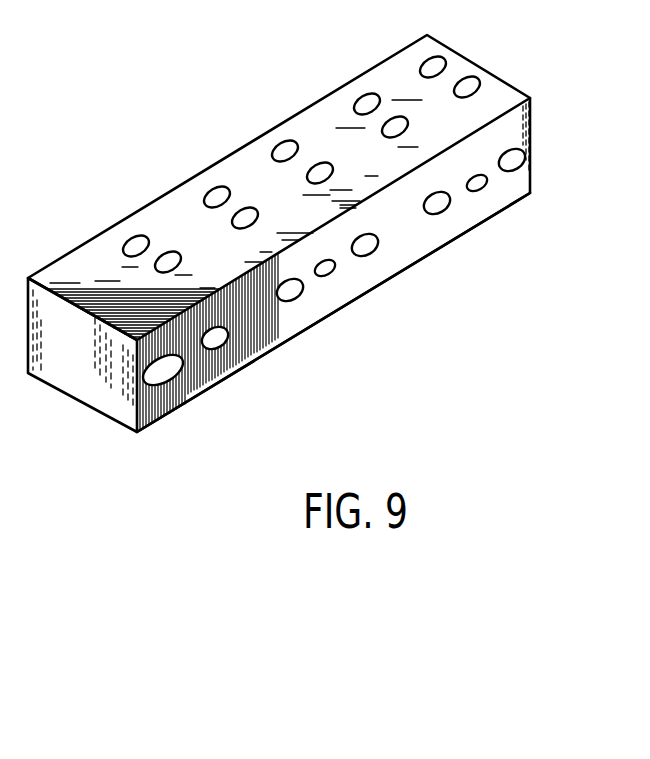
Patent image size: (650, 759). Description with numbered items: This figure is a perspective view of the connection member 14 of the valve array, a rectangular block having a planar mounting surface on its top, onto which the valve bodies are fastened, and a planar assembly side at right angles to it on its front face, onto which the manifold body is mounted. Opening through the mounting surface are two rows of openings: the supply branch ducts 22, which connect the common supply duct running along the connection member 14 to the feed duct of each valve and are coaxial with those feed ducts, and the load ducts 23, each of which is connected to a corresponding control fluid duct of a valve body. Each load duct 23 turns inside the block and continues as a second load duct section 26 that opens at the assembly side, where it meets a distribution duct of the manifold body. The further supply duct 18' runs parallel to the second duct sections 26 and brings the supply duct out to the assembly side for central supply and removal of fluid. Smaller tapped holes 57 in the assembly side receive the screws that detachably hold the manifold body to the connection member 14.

The connection member 14 is at (73, 355).
The further supply duct 18' is at (333, 316).
The supply branch ducts 22 is at (135, 234).
The load ducts 23 is at (168, 251).
The second load duct section 26 is at (222, 348).
The tapped holes 57 is at (337, 270).